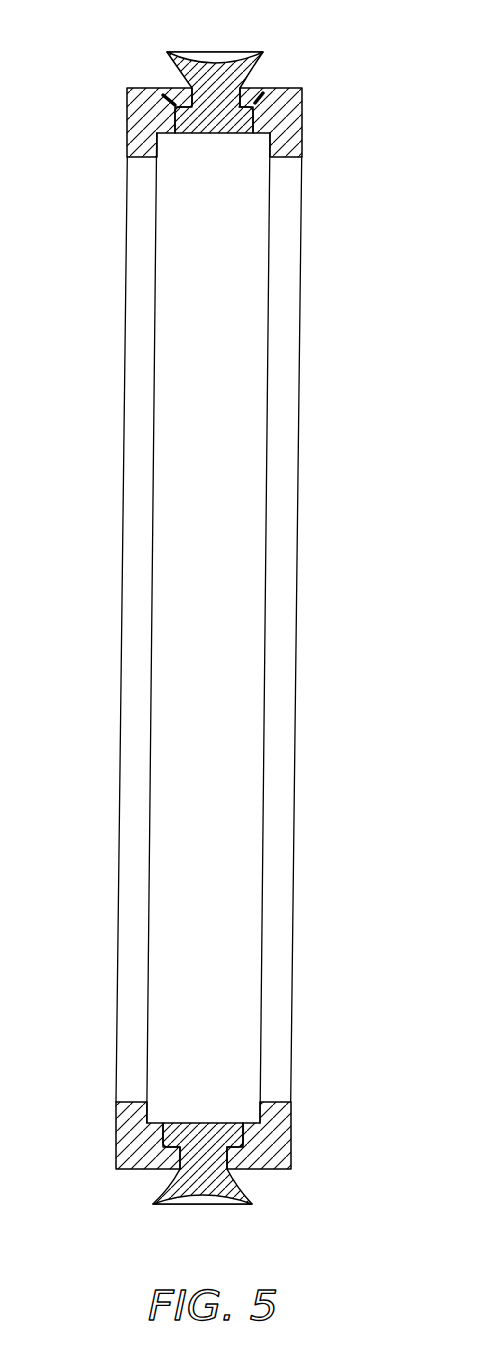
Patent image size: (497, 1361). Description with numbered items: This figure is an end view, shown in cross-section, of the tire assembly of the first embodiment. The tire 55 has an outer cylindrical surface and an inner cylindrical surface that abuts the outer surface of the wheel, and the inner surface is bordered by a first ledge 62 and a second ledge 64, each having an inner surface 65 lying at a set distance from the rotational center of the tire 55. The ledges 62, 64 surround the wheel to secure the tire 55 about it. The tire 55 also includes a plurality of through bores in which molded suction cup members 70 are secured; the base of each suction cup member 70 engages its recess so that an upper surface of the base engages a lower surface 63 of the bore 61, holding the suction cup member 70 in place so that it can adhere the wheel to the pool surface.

The tire 55 is at (214, 153).
The suction cup member 70 is at (246, 69).
The bore 61 is at (123, 67).
The lower surface of bore 63 is at (291, 75).
The first ledge 62 is at (126, 125).
The second ledge 64 is at (315, 628).
The inner surface of ledge 65 is at (110, 628).